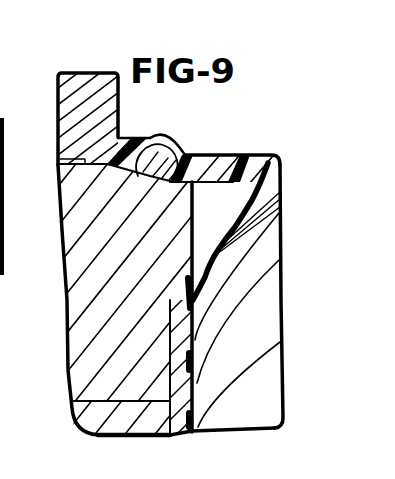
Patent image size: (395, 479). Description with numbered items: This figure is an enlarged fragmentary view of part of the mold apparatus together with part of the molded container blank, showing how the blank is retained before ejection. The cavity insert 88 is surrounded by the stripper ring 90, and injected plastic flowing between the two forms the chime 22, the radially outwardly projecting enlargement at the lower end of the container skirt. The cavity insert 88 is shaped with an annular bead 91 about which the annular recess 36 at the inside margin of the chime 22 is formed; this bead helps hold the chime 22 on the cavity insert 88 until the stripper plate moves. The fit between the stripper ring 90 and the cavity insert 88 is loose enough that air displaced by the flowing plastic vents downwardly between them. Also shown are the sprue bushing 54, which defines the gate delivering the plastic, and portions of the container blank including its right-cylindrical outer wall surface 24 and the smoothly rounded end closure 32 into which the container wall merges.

The stripper ring 90 is at (83, 73).
The cavity insert 88 is at (68, 302).
The sprue bushing 54 is at (78, 416).
The end closure 32 is at (195, 397).
The annular bead 91 is at (178, 160).
The chime 22 is at (138, 172).
The annular recess 36 is at (168, 134).
The outer wall surface 24 is at (257, 155).